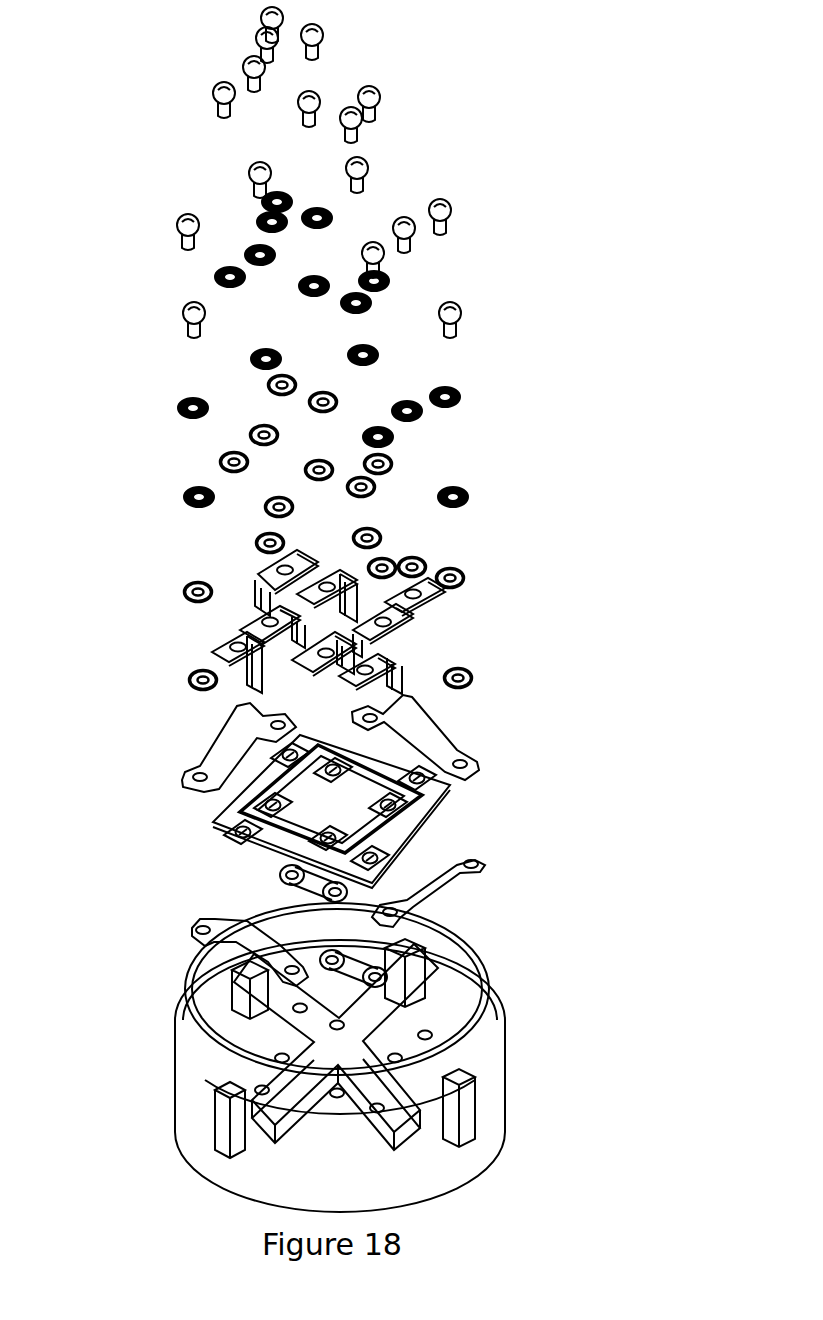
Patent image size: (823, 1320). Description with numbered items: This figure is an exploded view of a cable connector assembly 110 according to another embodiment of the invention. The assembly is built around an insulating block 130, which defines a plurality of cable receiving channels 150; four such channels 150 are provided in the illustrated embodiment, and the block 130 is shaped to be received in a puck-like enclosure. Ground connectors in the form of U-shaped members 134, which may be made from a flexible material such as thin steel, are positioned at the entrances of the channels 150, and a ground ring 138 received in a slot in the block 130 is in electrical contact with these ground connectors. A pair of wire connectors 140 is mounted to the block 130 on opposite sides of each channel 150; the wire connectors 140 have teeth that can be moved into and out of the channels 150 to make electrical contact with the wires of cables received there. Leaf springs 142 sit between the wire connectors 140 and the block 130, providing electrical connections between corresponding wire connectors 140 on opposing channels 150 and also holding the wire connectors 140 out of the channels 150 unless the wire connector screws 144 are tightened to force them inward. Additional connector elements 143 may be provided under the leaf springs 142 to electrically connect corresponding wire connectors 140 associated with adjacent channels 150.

The cable connector assembly 110 is at (646, 162).
The insulating block 130 is at (377, 1186).
The U-shaped member 134 is at (443, 722).
The ground ring 138 is at (462, 942).
The wire connector 140 is at (443, 632).
The leaf spring 142 is at (445, 797).
The connector element 143 is at (330, 955).
The wire connector screw 144 is at (405, 143).
The cable receiving channel 150 is at (427, 970).